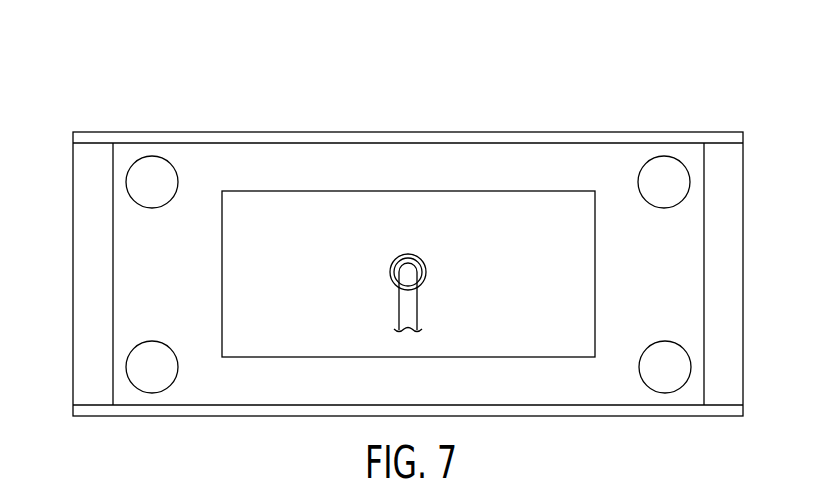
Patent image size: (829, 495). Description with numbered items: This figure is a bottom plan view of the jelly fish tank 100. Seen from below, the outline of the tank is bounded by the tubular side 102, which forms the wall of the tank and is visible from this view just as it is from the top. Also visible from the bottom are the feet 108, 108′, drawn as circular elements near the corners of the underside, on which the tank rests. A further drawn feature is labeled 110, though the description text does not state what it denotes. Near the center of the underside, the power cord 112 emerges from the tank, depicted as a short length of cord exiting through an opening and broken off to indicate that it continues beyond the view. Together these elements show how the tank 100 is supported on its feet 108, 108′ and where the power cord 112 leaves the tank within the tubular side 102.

The jelly fish tank 100 is at (557, 67).
The tubular side 102 is at (93, 277).
The feet 108 is at (152, 156).
The feet 108′ is at (152, 393).
The side rail 110 is at (688, 278).
The power cord 112 is at (405, 302).